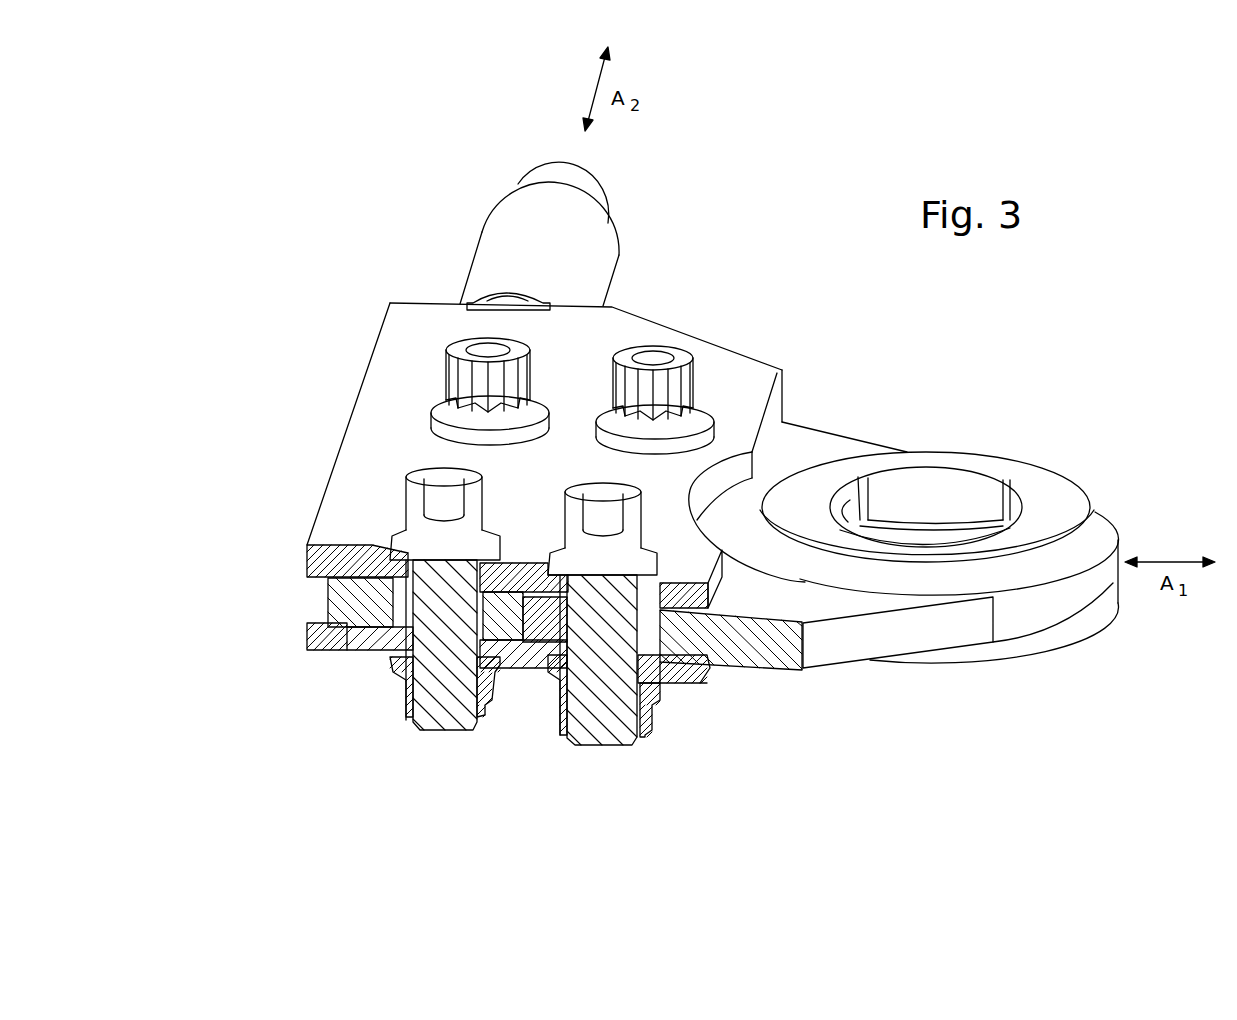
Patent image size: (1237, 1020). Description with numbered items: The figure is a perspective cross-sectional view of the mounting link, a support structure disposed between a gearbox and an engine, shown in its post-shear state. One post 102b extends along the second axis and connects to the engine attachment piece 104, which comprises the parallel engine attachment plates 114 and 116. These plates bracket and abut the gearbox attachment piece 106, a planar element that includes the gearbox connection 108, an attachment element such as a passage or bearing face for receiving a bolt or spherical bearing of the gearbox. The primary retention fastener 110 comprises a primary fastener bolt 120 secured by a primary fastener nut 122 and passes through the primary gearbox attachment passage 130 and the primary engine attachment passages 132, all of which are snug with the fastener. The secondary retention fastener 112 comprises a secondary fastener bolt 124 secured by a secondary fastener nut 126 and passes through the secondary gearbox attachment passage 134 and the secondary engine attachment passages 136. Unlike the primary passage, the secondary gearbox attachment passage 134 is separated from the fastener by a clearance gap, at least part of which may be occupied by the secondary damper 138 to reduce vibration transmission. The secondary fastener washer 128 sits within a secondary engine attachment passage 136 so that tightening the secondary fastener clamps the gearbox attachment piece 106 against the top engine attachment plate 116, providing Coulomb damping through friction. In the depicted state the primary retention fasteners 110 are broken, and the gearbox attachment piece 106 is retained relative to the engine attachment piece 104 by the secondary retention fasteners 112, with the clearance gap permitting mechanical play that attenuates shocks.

The post 102b is at (583, 247).
The engine attachment piece 104 is at (330, 472).
The gearbox attachment piece 106 is at (851, 670).
The gearbox connection 108 is at (962, 488).
The primary retention fastener 110 is at (665, 403).
The secondary retention fastener 112 is at (537, 358).
The engine attachment plate 114 is at (703, 680).
The engine attachment plate 116 is at (748, 383).
The primary fastener bolt 120 is at (622, 728).
The primary fastener nut 122 is at (645, 677).
The secondary fastener bolt 124 is at (440, 733).
The secondary fastener nut 126 is at (410, 712).
The secondary fastener washer 128 is at (527, 657).
The primary gearbox attachment passage 130 is at (680, 673).
The primary engine attachment passage 132 is at (670, 582).
The secondary gearbox attachment passage 134 is at (540, 660).
The secondary engine attachment passage 136 is at (408, 568).
The secondary damper 138 is at (408, 602).